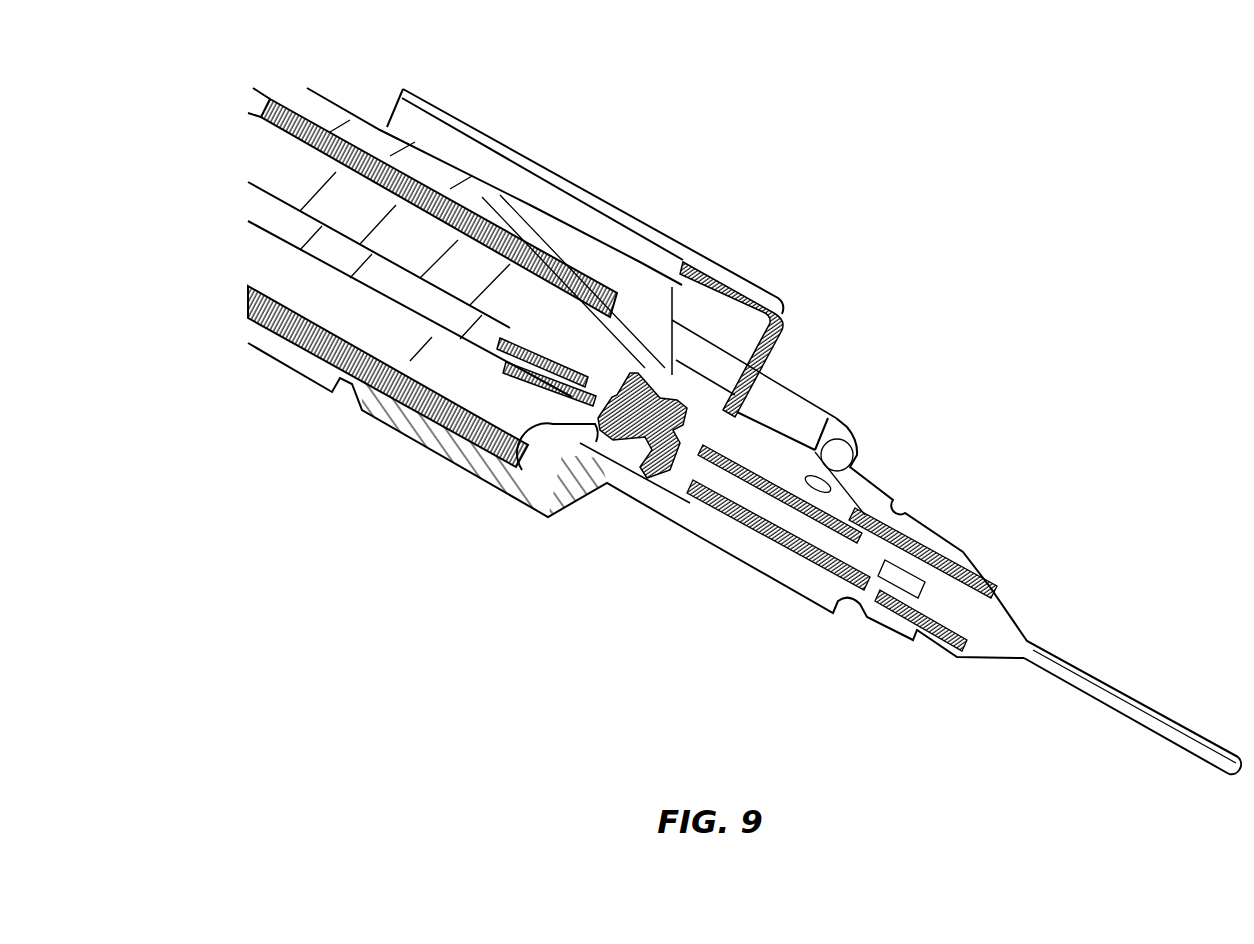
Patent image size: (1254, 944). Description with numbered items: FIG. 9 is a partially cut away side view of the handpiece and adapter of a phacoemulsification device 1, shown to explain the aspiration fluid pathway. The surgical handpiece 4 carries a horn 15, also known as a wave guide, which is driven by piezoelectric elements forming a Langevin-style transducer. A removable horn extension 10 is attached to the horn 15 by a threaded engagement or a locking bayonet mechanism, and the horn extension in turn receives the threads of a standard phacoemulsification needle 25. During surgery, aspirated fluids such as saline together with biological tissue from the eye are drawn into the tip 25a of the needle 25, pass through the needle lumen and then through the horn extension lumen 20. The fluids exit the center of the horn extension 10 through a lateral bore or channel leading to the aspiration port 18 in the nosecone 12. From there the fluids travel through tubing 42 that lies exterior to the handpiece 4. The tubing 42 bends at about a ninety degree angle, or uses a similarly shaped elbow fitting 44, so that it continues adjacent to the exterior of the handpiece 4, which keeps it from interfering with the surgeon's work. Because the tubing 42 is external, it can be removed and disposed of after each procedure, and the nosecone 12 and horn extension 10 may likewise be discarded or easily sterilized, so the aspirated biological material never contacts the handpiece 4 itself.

The injection device 1 is at (731, 459).
The surgical handpiece 4 is at (312, 350).
The horn extension 10 is at (648, 442).
The nosecone 12 is at (545, 488).
The horn 15 is at (440, 363).
The aspiration port 18 is at (742, 405).
The horn extension lumen 20 is at (860, 543).
The phacoemulsification needle 25 is at (1115, 708).
The tip of the needle 25a is at (1208, 766).
The tubing 42 is at (640, 215).
The elbow fitting 44 is at (782, 326).